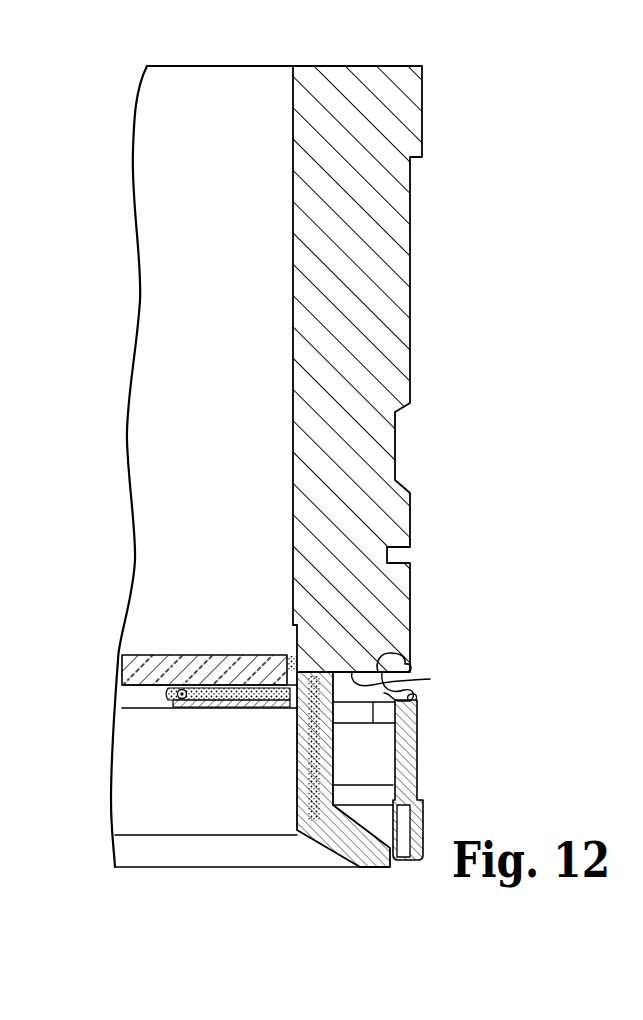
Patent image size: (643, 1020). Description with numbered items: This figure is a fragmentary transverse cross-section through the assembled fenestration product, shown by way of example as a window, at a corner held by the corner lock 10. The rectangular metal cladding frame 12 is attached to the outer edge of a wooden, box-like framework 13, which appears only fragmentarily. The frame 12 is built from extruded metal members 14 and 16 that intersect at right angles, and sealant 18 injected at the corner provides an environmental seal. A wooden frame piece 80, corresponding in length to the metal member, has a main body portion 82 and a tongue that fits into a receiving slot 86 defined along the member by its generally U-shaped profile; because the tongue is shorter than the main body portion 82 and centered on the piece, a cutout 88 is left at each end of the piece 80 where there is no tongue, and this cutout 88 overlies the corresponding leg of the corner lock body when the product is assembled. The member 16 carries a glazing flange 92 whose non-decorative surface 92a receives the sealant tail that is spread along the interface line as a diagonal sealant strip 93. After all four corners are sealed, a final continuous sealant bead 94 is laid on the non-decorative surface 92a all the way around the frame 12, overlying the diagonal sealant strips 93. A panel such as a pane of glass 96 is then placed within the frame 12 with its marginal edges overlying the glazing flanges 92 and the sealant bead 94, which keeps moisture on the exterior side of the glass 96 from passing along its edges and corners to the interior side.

The corner lock 10 is at (443, 777).
The cladding frame 12 is at (240, 871).
The wooden framework 13 is at (378, 369).
The extruded metal member 14 is at (180, 857).
The extruded metal member 16 is at (414, 794).
The sealant 18 is at (297, 785).
The wooden frame piece 80 is at (425, 125).
The main body portion 82 is at (396, 383).
The receiving slot 86 is at (403, 655).
The cutout 88 is at (387, 682).
The glazing flange 92 is at (243, 706).
The non-decorative surface 92a is at (223, 688).
The diagonal sealant strip 93 is at (293, 660).
The sealant bead 94 is at (230, 708).
The pane of glass 96 is at (178, 655).